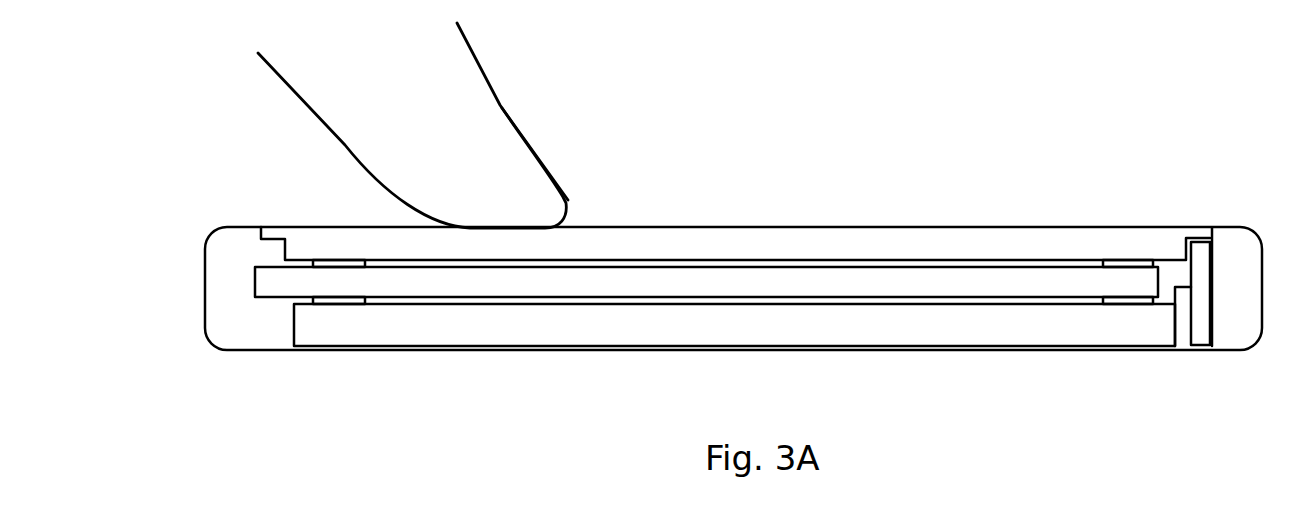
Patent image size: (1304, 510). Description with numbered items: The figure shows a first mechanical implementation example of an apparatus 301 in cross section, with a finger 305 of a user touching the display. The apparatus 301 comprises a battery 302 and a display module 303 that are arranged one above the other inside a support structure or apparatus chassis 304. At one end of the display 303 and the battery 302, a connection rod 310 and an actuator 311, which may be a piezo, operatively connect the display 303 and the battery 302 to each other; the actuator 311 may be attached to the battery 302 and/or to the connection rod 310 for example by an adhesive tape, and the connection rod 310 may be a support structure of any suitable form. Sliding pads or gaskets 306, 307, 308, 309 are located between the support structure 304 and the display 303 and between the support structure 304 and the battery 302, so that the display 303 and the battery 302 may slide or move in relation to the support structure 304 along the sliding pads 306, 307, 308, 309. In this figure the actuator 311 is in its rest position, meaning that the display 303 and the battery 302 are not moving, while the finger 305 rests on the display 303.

The apparatus 301 is at (613, 353).
The battery 302 is at (448, 344).
The display module 303 is at (718, 228).
The support structure/apparatus chassis 304 is at (255, 287).
The finger 305 is at (285, 85).
The sliding pad 306 is at (348, 307).
The sliding pad 307 is at (335, 261).
The sliding pad 308 is at (1107, 307).
The sliding pad 309 is at (1132, 260).
The connection rod 310 is at (1210, 247).
The actuator 311 is at (1177, 350).